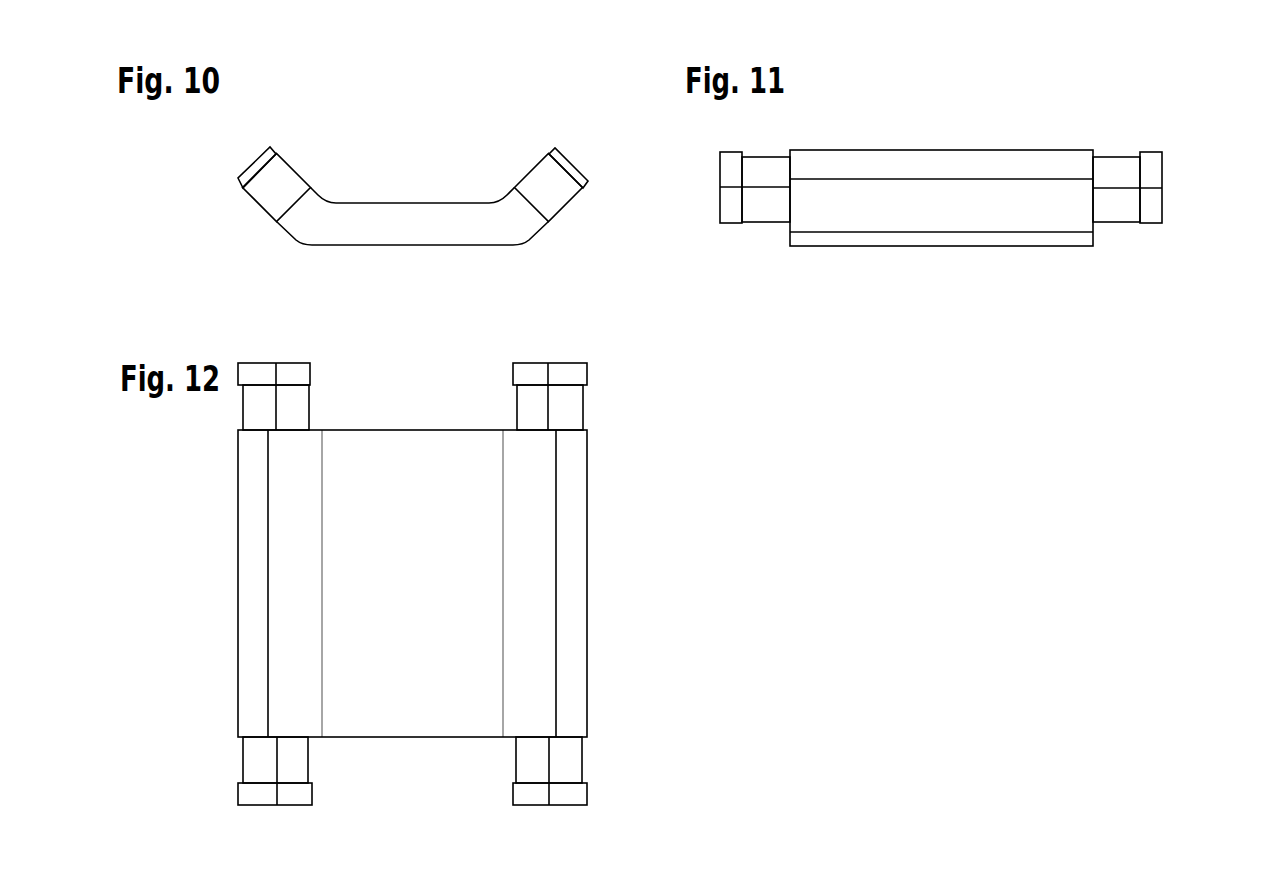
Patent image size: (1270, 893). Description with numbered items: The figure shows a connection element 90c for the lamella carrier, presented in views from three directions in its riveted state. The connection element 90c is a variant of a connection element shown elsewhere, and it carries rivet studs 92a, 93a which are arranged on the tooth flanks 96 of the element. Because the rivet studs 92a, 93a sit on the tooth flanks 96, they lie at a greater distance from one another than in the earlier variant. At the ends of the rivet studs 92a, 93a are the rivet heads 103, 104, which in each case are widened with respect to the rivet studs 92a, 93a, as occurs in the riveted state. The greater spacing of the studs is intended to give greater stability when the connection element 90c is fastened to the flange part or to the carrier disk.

In FIG. 10, the connection element 90c is at (415, 201).
In FIG. 11, the connection element 90c is at (944, 188).
In FIG. 12, the connection element 90c is at (430, 586).
In FIG. 10, the tooth flanks 96 is at (296, 216).
In FIG. 11, the tooth flanks 96 is at (900, 236).
In FIG. 12, the tooth flanks 96 is at (278, 537).
In FIG. 10, the rivet head 103 is at (264, 188).
In FIG. 11, the rivet head 103 is at (730, 170).
In FIG. 12, the rivet head 103 is at (295, 797).
In FIG. 11, the rivet head 104 is at (1152, 172).
In FIG. 12, the rivet head 104 is at (295, 372).
In FIG. 11, the rivet stud 92a is at (1132, 214).
In FIG. 12, the rivet stud 92a is at (293, 395).
In FIG. 11, the rivet stud 93a is at (750, 212).
In FIG. 12, the rivet stud 93a is at (293, 773).